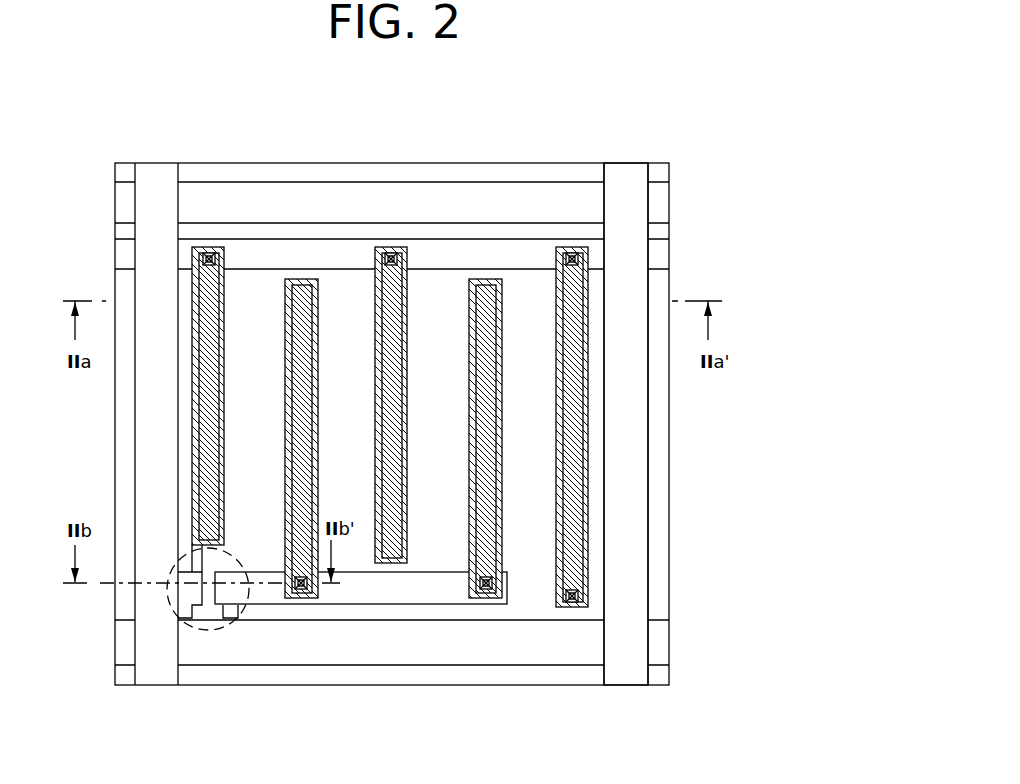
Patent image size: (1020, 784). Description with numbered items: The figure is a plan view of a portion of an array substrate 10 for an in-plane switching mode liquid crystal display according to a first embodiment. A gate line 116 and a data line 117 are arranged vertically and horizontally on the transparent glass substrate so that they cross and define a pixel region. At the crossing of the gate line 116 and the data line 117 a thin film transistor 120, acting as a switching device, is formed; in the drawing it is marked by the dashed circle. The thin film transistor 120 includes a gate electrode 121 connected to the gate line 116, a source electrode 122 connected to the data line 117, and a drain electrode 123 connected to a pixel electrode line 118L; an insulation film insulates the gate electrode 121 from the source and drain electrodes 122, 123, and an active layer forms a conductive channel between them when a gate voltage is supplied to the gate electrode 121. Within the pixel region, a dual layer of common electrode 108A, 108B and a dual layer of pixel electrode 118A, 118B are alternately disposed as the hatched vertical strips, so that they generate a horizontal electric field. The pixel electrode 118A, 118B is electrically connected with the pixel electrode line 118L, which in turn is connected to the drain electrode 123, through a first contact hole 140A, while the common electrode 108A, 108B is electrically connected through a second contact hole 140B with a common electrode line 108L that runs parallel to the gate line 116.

The thin film transistor array substrate 10 is at (686, 162).
The common electrode line 108L is at (658, 250).
The common electrode 108A is at (590, 515).
The common electrode 108B is at (590, 483).
The gate line 116 is at (555, 650).
The data line 117 is at (633, 572).
The pixel electrode 118A is at (500, 427).
The pixel electrode 118B is at (495, 395).
The pixel electrode line 118L is at (373, 604).
The thin film transistor 120 is at (162, 608).
The gate electrode 121 is at (196, 552).
The source electrode 122 is at (183, 618).
The drain electrode 123 is at (234, 618).
The first contact hole 140A is at (488, 590).
The second contact hole 140B is at (571, 252).